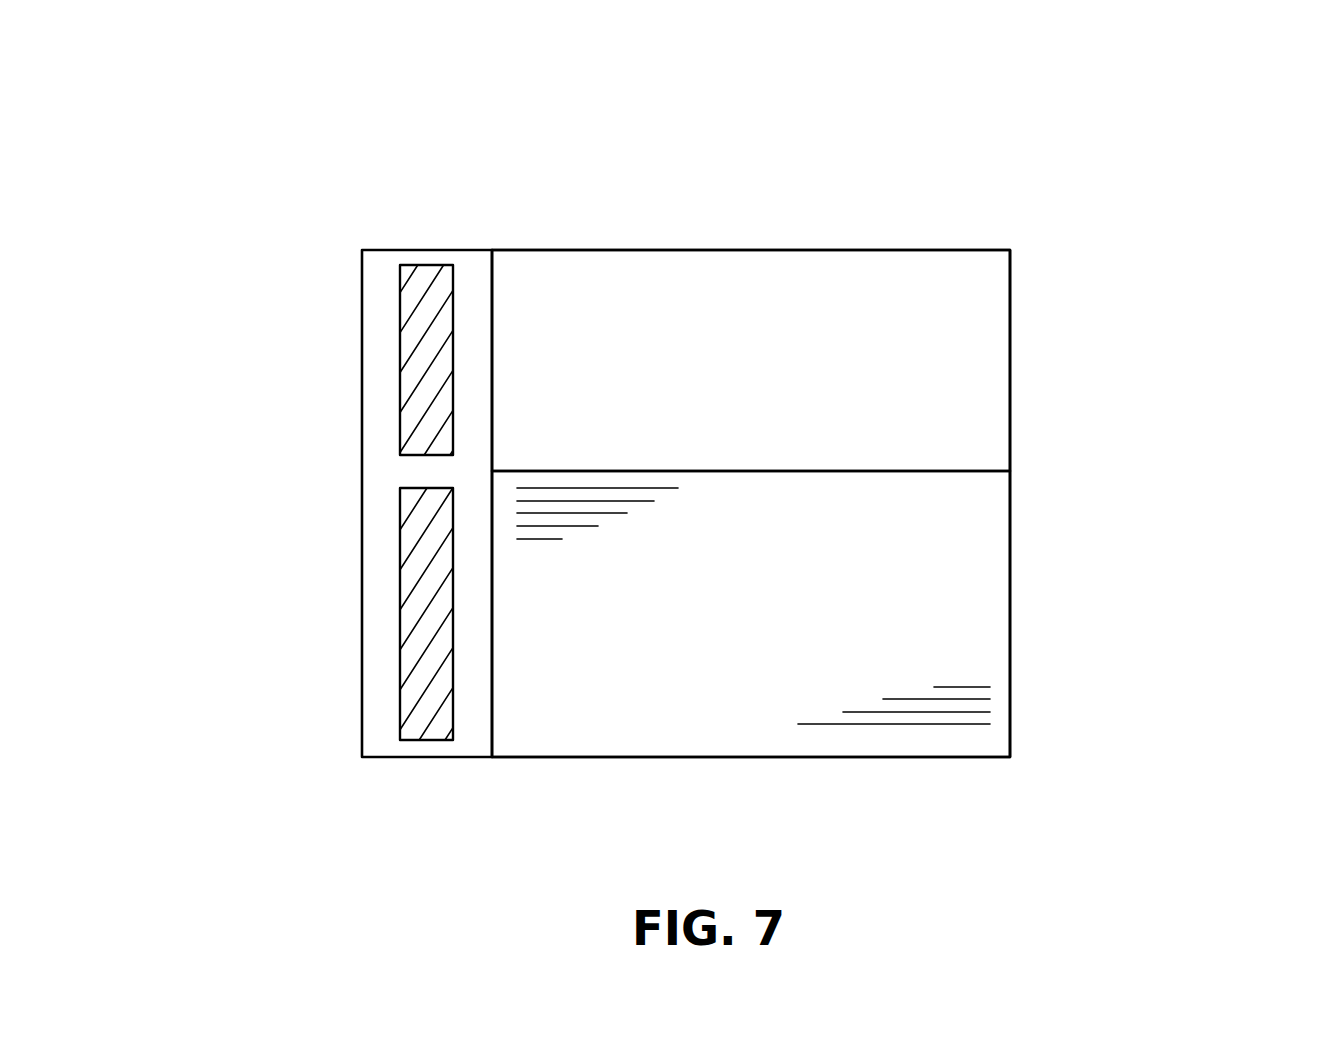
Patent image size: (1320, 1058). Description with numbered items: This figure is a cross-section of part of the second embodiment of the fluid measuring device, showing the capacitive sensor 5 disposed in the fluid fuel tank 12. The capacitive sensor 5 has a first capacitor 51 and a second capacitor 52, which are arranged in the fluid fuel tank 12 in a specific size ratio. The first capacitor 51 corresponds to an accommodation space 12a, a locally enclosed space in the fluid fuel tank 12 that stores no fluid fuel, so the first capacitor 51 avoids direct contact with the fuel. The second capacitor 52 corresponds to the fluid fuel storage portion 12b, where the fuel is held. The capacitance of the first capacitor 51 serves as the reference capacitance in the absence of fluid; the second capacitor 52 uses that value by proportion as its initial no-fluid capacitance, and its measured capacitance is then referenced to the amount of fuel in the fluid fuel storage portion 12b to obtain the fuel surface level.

The fluid fuel tank 12 is at (1040, 214).
The accommodation space 12a is at (973, 382).
The fluid fuel storage portion 12b is at (973, 605).
The capacitive sensor 5 is at (293, 502).
The first capacitor 51 is at (400, 358).
The second capacitor 52 is at (400, 612).